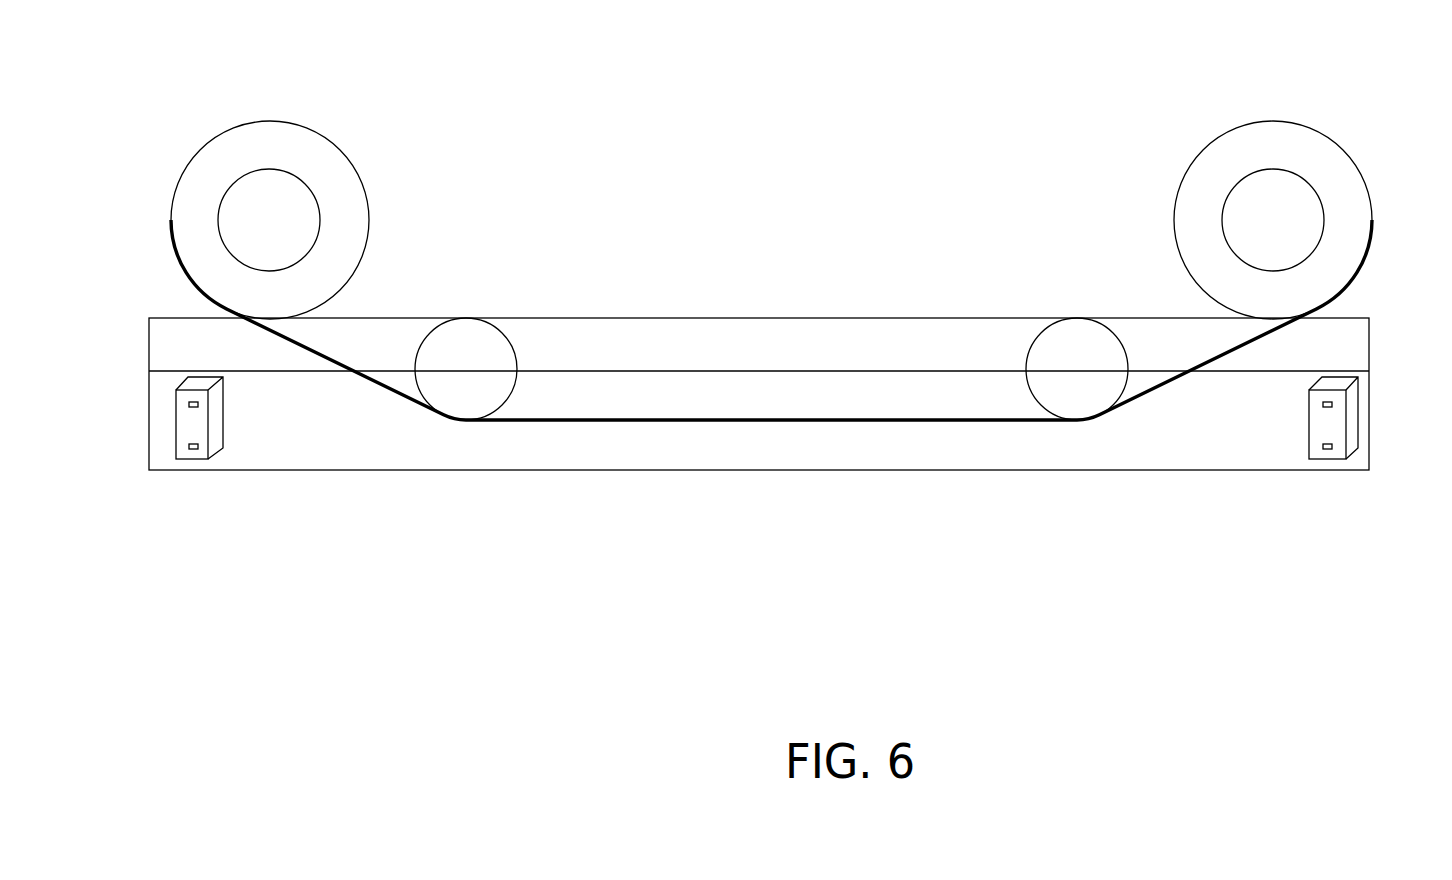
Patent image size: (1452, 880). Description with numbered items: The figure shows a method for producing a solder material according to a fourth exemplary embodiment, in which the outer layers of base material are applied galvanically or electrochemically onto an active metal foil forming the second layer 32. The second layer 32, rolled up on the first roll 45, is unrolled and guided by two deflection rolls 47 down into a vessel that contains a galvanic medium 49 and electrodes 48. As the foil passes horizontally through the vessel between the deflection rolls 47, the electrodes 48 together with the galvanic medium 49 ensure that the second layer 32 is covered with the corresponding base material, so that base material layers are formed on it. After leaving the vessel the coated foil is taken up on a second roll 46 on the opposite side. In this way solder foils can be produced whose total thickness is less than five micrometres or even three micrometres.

The second layer 32 is at (770, 421).
The first roll 45 is at (308, 160).
The titanium take-up roll 46 is at (1292, 140).
The deflection rolls 47 is at (472, 352).
The electrodes 48 is at (182, 423).
The galvanic medium 49 is at (888, 448).